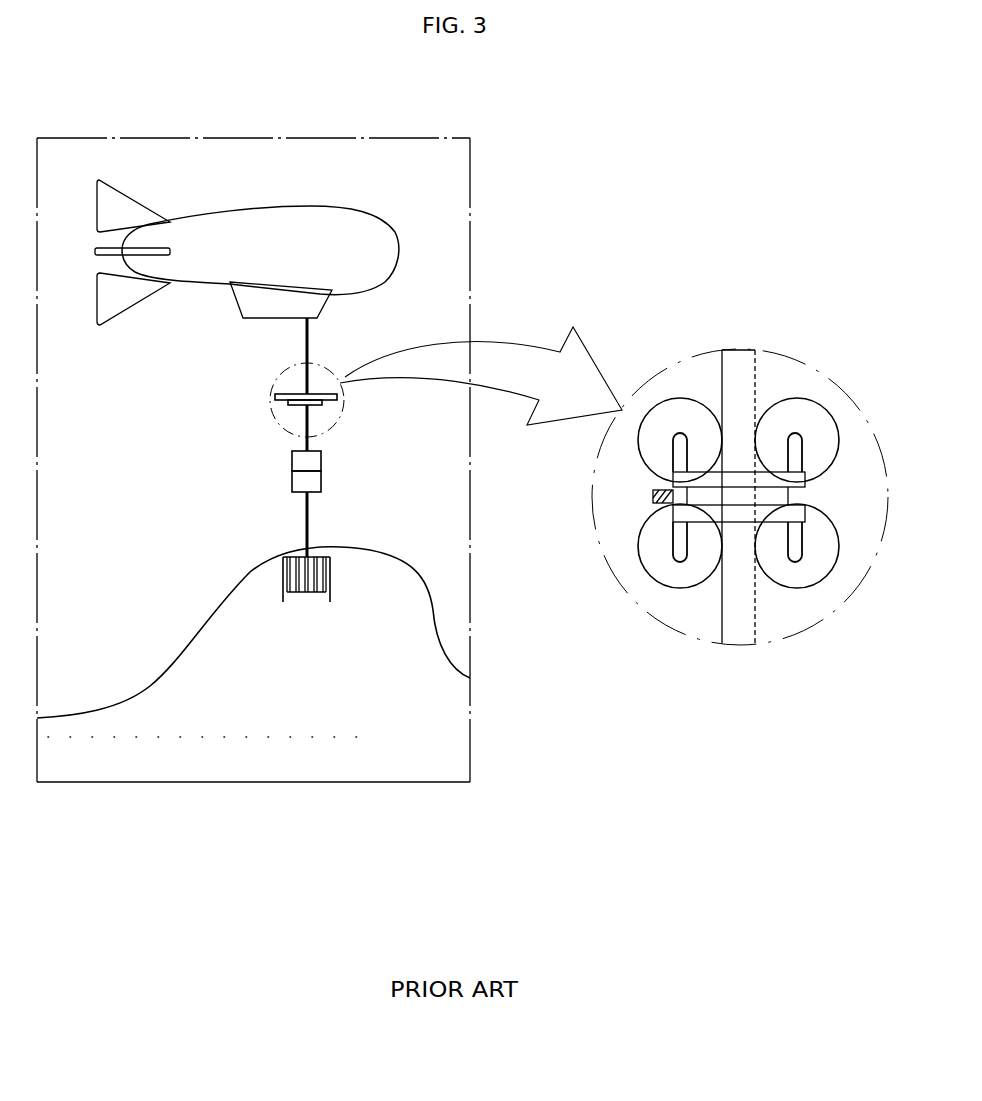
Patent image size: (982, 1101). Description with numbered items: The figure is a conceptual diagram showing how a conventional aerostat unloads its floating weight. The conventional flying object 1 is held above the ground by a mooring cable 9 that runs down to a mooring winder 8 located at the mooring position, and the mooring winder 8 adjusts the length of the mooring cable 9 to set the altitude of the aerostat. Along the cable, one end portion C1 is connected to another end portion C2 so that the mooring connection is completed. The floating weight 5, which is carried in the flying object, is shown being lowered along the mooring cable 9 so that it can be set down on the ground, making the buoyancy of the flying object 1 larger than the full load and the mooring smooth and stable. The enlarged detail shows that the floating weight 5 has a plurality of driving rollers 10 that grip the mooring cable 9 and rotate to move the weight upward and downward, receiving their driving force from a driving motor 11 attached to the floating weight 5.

The flying object 1 is at (240, 185).
The floating weight 5 is at (328, 388).
The mooring winder 8 is at (332, 578).
The mooring cable 9 is at (745, 370).
The driving rollers 10 is at (800, 420).
The driving motor 11 is at (653, 478).
The end portion C1 is at (322, 460).
The end portion C2 is at (322, 483).